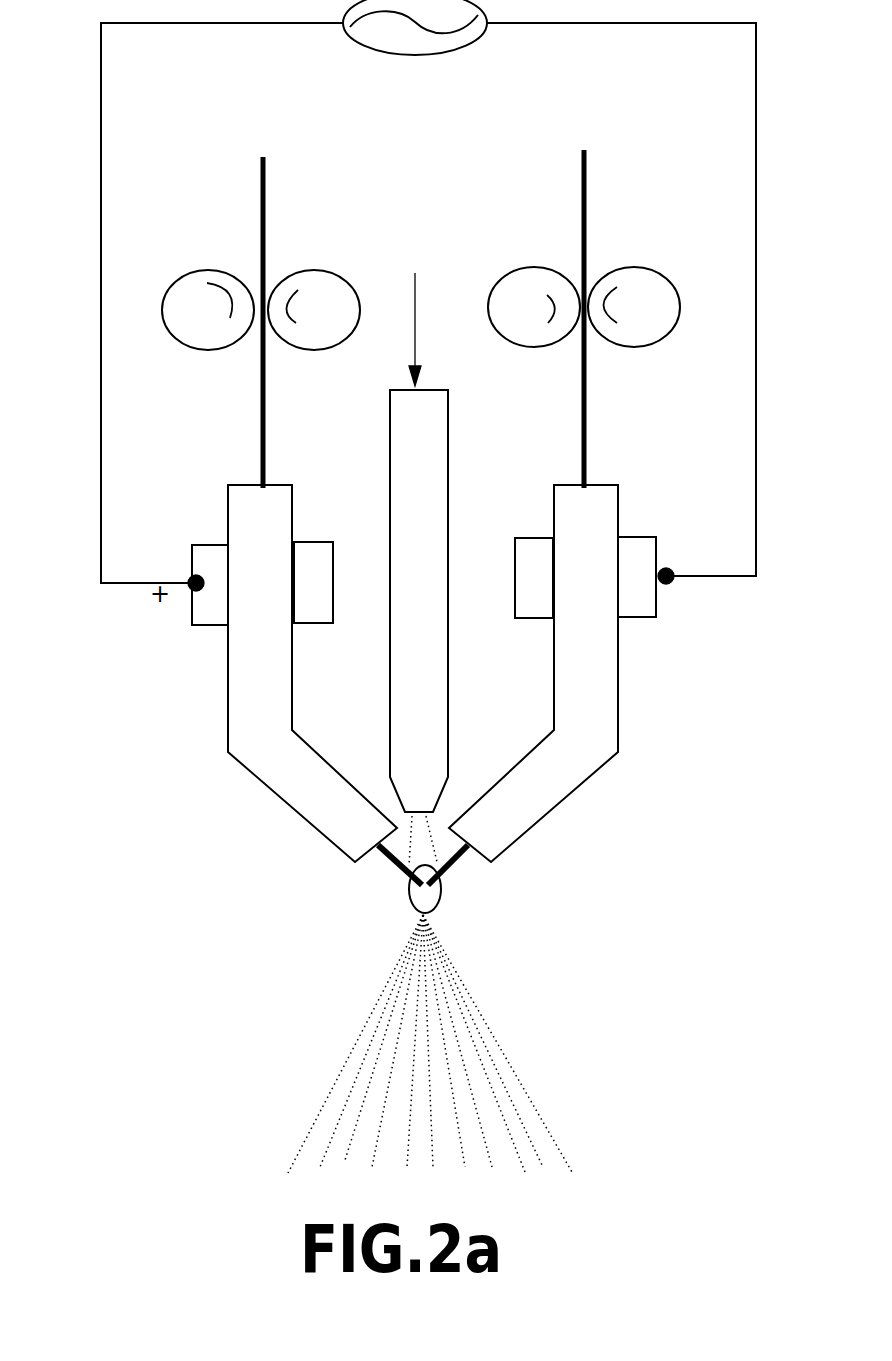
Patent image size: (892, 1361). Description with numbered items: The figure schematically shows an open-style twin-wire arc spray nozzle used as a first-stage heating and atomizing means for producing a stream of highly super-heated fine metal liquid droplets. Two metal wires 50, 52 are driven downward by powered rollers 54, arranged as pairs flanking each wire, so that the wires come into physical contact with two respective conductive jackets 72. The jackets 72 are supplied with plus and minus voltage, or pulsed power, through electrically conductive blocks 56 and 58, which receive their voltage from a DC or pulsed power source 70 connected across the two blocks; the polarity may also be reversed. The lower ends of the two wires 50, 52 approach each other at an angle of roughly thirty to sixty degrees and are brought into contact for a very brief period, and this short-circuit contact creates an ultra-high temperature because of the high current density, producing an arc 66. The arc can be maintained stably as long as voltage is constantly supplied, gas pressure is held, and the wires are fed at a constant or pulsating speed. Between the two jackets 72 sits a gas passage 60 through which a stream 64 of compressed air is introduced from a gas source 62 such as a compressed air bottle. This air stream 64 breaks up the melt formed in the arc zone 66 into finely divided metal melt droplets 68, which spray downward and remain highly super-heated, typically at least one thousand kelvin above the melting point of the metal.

The metal wire 50 is at (257, 208).
The metal wire 52 is at (577, 208).
The powered rollers 54 is at (160, 333).
The electrically conductive block 56 is at (187, 558).
The electrically conductive block 58 is at (657, 553).
The gas passage 60 is at (446, 530).
The gas source 62 is at (408, 305).
The stream of compressed air 64 is at (422, 820).
The arc 66 is at (430, 890).
The metal melt droplets 68 is at (470, 1070).
The power source 70 is at (425, 55).
The conductive jackets 72 is at (278, 777).